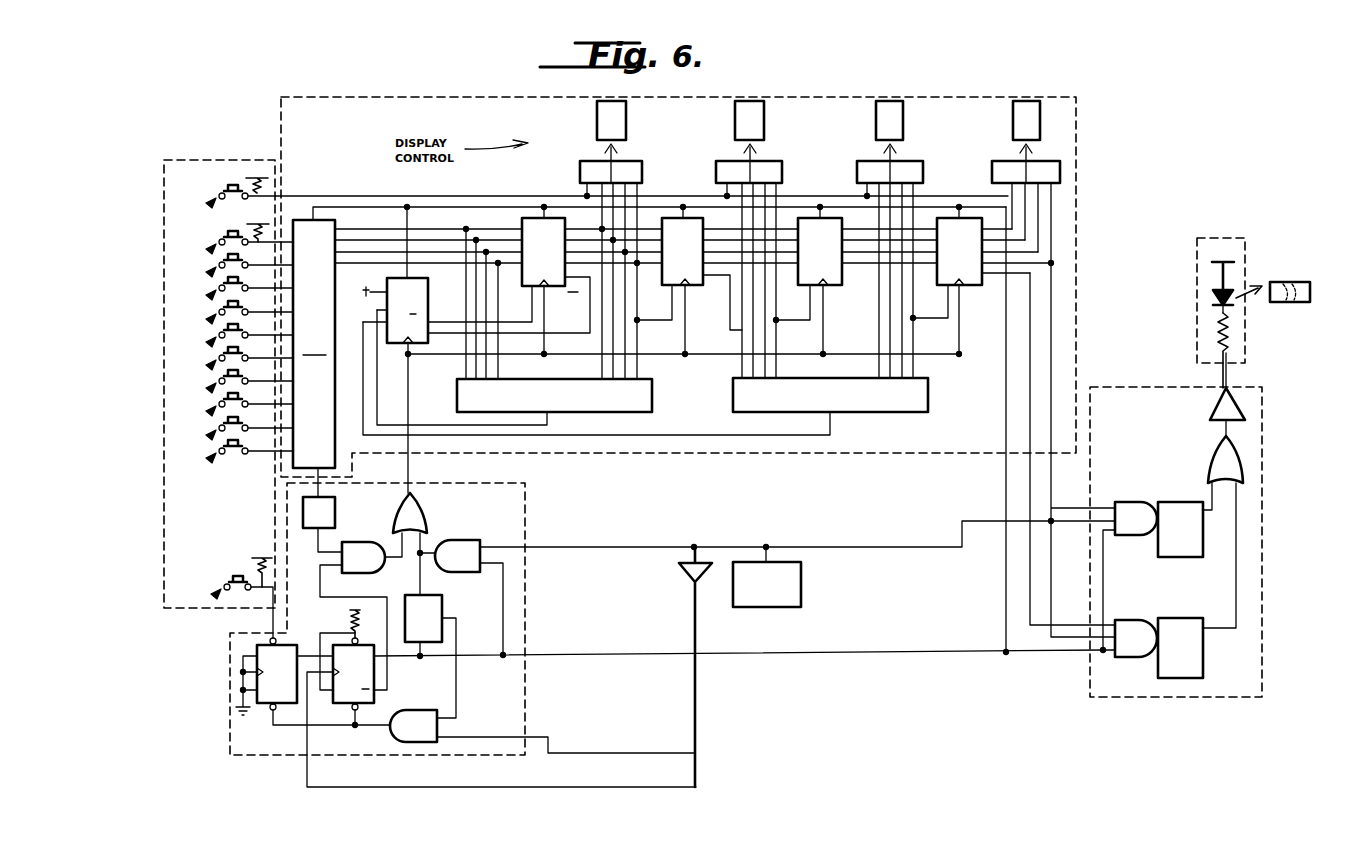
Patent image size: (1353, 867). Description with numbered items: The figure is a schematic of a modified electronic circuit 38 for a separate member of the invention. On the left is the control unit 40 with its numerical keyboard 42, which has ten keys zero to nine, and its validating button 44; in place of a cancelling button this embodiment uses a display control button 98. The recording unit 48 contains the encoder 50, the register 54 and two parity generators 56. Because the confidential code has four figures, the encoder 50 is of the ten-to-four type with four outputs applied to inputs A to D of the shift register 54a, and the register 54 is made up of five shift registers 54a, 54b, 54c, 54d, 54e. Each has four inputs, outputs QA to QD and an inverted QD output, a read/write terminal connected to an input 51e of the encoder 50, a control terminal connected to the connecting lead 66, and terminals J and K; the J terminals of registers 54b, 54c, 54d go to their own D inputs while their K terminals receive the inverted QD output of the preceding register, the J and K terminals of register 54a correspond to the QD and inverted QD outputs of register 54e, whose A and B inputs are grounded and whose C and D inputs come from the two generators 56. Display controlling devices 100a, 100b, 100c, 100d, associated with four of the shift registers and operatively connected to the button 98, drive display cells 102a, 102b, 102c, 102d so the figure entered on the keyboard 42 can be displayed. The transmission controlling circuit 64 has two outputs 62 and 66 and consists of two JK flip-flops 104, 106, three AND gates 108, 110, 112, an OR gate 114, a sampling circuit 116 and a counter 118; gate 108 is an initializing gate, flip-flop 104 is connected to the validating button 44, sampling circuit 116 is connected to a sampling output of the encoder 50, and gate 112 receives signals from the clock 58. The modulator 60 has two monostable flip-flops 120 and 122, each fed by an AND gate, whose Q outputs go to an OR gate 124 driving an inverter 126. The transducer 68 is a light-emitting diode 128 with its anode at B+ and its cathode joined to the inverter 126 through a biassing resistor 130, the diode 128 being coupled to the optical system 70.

The electronic circuit 38 is at (1176, 158).
The control unit 40 is at (194, 622).
The numerical keyboard 42 is at (242, 470).
The validating button 44 is at (215, 572).
The recording unit 48 is at (1076, 162).
The encoder 50 is at (407, 358).
The input of the encoder 51e is at (303, 220).
The register 54 is at (962, 370).
The shift register 54a is at (549, 290).
The shift register 54b is at (711, 290).
The shift register 54c is at (848, 290).
The shift register 54d is at (972, 290).
The shift register 54e is at (420, 358).
The parity generator 56 is at (692, 395).
The clock 58 is at (767, 588).
The modulator 60 is at (1262, 545).
The output 62 is at (568, 655).
The transmission controlling circuit 64 is at (532, 712).
The connecting lead 66 is at (412, 470).
The transducer 68 is at (1250, 358).
The optical system 70 is at (1280, 280).
The display control button 98 is at (222, 183).
The display controlling device 100a is at (582, 174).
The display controlling device 100b is at (712, 174).
The display controlling device 100c is at (855, 174).
The display controlling device 100d is at (998, 170).
The display cell 102a is at (596, 124).
The display cell 102b is at (734, 126).
The display cell 102c is at (875, 126).
The display cell 102d is at (1008, 126).
The JK flip-flop 104 is at (257, 705).
The JK flip-flop 106 is at (355, 728).
The AND gate 108 is at (408, 722).
The AND gate 110 is at (361, 611).
The AND gate 112 is at (767, 589).
The OR gate 114 is at (428, 516).
The sampling circuit 116 is at (330, 512).
The counter 118 is at (443, 604).
The monostable flip-flop 120 is at (1148, 488).
The monostable flip-flop 122 is at (1152, 607).
The OR gate 124 is at (1214, 466).
The inverter 126 is at (1212, 426).
The light-emitting diode 128 is at (1212, 302).
The biassing resistor 130 is at (1216, 348).